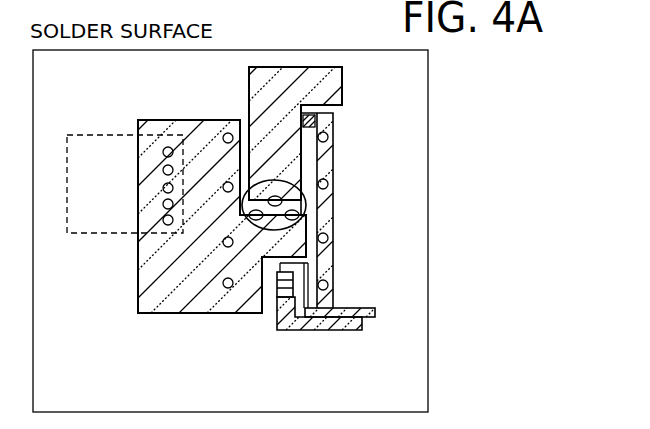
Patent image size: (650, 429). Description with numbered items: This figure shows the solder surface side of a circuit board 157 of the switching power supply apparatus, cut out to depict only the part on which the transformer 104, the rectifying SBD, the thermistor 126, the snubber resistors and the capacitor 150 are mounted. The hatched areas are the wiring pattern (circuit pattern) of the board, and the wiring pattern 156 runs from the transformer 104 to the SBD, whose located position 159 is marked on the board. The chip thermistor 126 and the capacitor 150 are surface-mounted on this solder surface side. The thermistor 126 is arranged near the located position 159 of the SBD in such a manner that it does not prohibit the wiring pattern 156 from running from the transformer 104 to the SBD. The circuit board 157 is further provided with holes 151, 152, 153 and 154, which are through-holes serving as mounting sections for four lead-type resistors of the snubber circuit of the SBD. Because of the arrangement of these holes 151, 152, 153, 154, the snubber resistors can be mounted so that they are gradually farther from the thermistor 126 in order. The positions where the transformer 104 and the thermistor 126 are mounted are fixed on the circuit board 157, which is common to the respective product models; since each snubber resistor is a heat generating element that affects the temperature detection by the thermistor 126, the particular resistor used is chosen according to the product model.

The transformer 104 is at (127, 150).
The thermistor 126 is at (272, 300).
The capacitor 150 is at (334, 124).
The hole 151 is at (222, 288).
The hole 152 is at (222, 246).
The hole 153 is at (227, 178).
The hole 154 is at (229, 133).
The wiring pattern 156 is at (138, 270).
The circuit board 157 is at (430, 98).
The located position of the SBD 159 is at (306, 212).